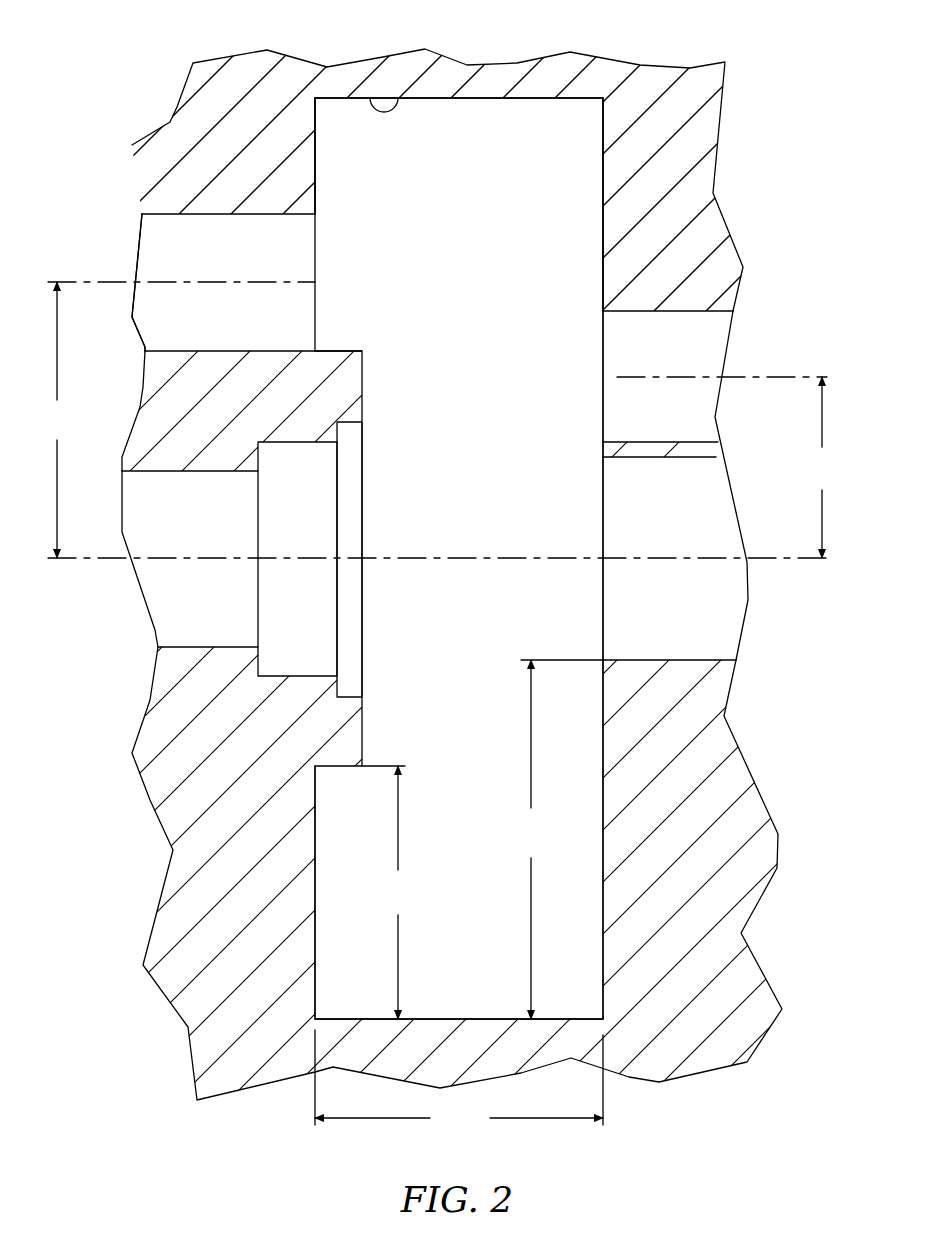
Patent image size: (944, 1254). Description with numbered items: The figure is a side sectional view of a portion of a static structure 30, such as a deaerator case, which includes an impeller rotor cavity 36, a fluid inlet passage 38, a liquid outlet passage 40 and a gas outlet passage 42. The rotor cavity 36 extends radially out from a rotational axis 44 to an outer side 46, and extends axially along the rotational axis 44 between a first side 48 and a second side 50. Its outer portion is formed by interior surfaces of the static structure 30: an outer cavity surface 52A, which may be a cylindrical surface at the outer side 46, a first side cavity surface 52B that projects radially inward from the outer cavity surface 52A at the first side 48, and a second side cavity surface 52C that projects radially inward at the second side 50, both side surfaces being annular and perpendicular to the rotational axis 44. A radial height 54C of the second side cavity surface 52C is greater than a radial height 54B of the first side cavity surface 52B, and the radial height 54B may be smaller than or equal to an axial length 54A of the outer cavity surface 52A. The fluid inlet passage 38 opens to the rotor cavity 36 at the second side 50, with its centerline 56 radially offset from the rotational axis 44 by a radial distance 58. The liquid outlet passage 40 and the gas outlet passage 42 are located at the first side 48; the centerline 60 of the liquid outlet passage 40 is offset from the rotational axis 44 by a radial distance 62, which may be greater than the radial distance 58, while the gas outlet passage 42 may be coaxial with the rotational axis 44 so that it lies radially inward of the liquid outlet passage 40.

The static structure 30 is at (736, 104).
The impeller rotor cavity 36 is at (428, 190).
The fluid inlet passage 38 is at (688, 345).
The liquid outlet passage 40 is at (160, 252).
The gas outlet passage 42 is at (172, 607).
The rotational axis 44 is at (453, 605).
The outer side 46 is at (398, 98).
The first side 48 is at (315, 133).
The second side 50 is at (603, 145).
The outer cavity surface 52A is at (493, 99).
The first side cavity surface 52B is at (315, 200).
The second side cavity surface 52C is at (603, 218).
The axial length 54A is at (459, 1081).
The radial height 54B is at (392, 892).
The radial height 54C is at (554, 839).
The centerline of the fluid inlet passage 56 is at (753, 378).
The radial distance 58 is at (822, 467).
The centerline of the liquid outlet passage 60 is at (113, 283).
The radial distance 62 is at (57, 420).